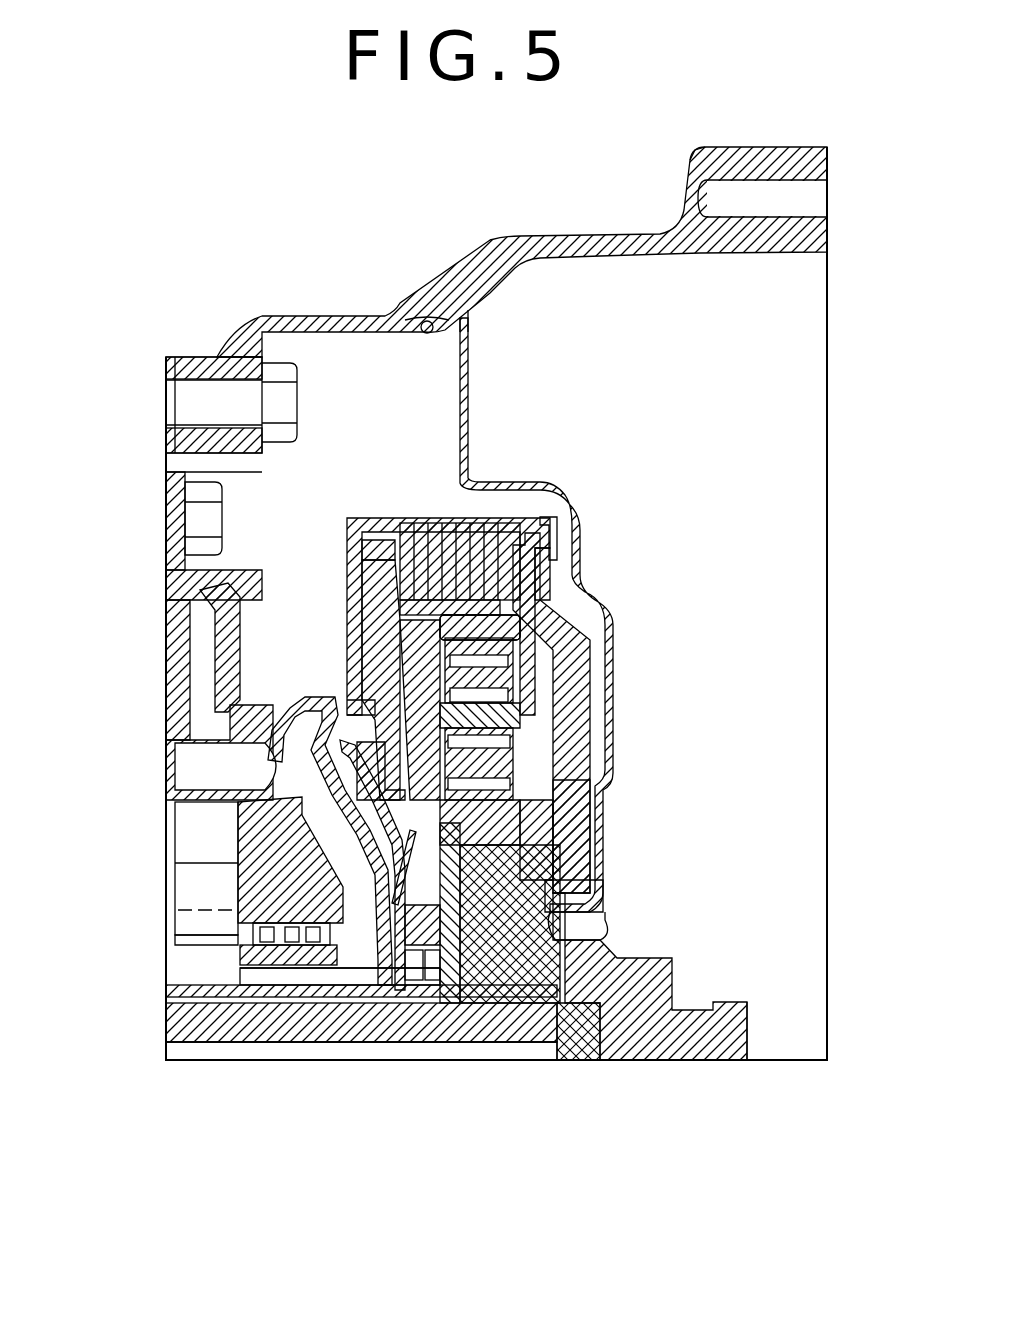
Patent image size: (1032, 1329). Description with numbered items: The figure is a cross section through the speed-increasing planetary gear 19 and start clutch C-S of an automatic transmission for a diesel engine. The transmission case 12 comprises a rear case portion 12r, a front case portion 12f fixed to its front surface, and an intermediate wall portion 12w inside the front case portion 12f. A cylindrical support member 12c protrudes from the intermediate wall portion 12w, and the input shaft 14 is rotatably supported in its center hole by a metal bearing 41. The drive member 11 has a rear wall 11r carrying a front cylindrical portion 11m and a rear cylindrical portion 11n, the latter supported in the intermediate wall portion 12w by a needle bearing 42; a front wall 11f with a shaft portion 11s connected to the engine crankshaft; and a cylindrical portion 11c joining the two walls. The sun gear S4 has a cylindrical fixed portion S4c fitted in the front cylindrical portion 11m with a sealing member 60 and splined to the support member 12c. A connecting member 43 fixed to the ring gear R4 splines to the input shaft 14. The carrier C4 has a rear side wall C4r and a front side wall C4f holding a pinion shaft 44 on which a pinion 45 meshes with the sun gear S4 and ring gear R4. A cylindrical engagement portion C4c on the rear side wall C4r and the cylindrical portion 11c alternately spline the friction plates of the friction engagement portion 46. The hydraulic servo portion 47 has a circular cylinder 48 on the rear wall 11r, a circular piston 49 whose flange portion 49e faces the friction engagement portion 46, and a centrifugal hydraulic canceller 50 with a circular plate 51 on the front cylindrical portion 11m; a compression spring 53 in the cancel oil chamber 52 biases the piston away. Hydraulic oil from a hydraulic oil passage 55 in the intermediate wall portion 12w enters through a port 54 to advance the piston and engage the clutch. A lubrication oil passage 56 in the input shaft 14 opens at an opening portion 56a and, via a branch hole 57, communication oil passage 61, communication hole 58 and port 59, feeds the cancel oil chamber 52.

The drive member 11 is at (600, 585).
The cylindrical portion 11c is at (363, 513).
The front wall 11f is at (613, 780).
The front cylindrical portion 11m is at (515, 1005).
The rear cylindrical portion 11n is at (212, 990).
The rear wall 11r is at (355, 682).
The shaft portion 11s is at (715, 1040).
The transmission case 12 is at (260, 322).
The cylindrical support member 12c is at (300, 1020).
The front case portion 12f is at (538, 246).
The rear case portion 12r is at (173, 348).
The intermediate wall portion 12w is at (330, 905).
The input shaft 14 is at (190, 1025).
The speed-increasing planetary gear 19 is at (600, 660).
The metal bearing 41 is at (272, 975).
The needle bearing 42 is at (330, 940).
The connecting member 43 is at (520, 755).
The pinion shaft 44 is at (520, 746).
The pinion 45 is at (520, 820).
The friction engagement portion 46 is at (437, 513).
The hydraulic servo portion 47 is at (330, 848).
The circular cylinder 48 is at (315, 1010).
The circular piston 49 is at (335, 748).
The flange portion 49e is at (340, 640).
The centrifugal hydraulic canceller 50 is at (575, 1010).
The circular plate 51 is at (620, 1020).
The cancel oil chamber 52 is at (405, 1000).
The compression spring 53 is at (395, 1000).
The port 54 is at (340, 1000).
The hydraulic oil passage 55 is at (252, 985).
The lubrication oil passage 56 is at (178, 1050).
The opening portion 56a is at (595, 1060).
The branch hole 57 is at (430, 990).
The communication hole 58 is at (545, 1005).
The port 59 is at (505, 1005).
The sealing member 60 is at (363, 985).
The communication oil passage 61 is at (455, 985).
The carrier C4 is at (398, 700).
The cylindrical engagement portion C4c is at (400, 603).
The front side wall C4f is at (535, 720).
The rear side wall C4r is at (345, 650).
The start clutch C-S is at (368, 545).
The ring gear R4 is at (548, 658).
The sun gear S4 is at (610, 880).
The cylindrical fixed portion S4c is at (470, 1005).